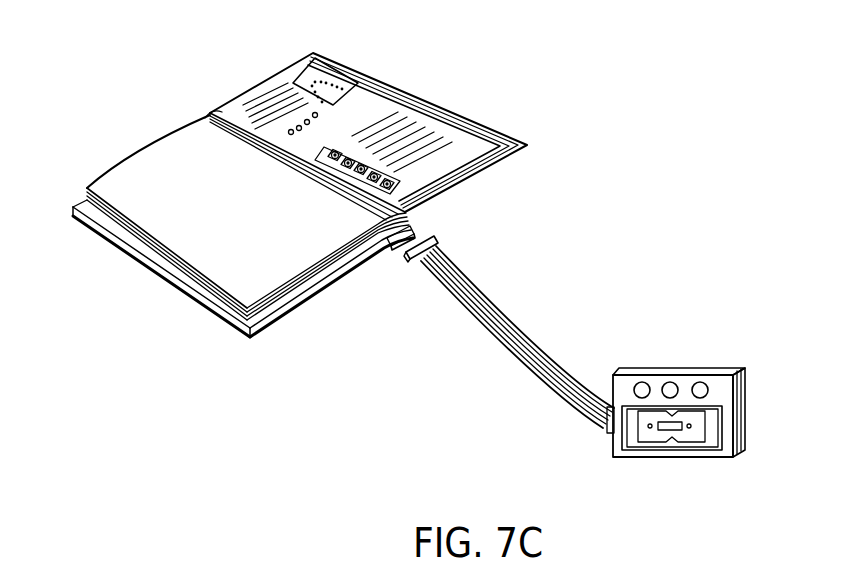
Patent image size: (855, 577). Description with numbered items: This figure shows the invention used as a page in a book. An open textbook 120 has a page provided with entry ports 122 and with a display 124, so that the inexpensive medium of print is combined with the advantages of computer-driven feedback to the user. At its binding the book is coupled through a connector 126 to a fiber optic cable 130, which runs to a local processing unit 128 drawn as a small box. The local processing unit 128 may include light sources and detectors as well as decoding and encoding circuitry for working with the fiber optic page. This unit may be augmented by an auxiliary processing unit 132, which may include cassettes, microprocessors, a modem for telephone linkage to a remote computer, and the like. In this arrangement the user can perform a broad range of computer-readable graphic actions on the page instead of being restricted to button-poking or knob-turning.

The textbook 120 is at (203, 330).
The entry ports 122 is at (342, 136).
The display 124 is at (353, 76).
The connector 126 is at (375, 257).
The local processing unit 128 is at (652, 402).
The fiber optic cable 130 is at (518, 366).
The auxiliary processing unit 132 is at (615, 446).